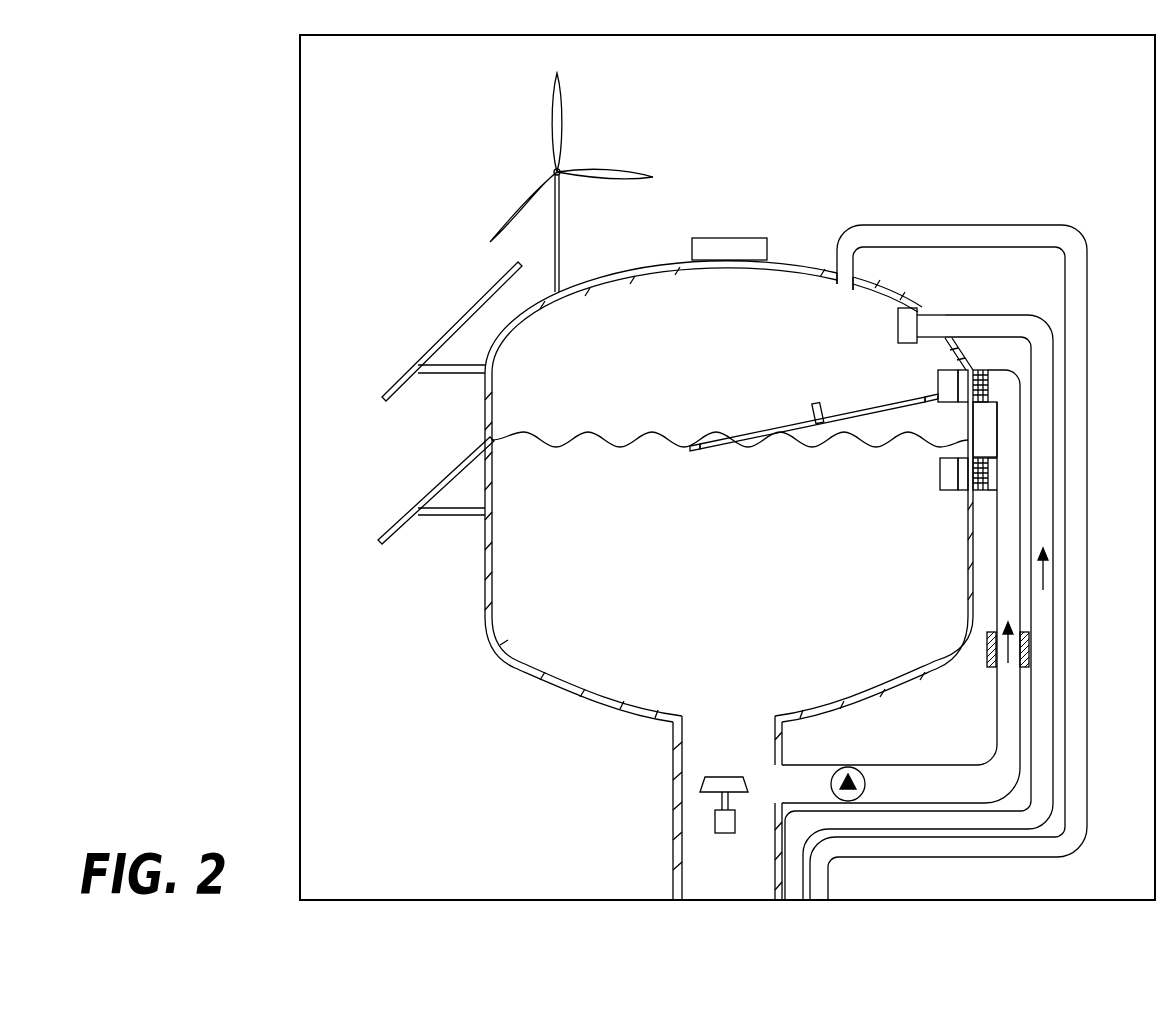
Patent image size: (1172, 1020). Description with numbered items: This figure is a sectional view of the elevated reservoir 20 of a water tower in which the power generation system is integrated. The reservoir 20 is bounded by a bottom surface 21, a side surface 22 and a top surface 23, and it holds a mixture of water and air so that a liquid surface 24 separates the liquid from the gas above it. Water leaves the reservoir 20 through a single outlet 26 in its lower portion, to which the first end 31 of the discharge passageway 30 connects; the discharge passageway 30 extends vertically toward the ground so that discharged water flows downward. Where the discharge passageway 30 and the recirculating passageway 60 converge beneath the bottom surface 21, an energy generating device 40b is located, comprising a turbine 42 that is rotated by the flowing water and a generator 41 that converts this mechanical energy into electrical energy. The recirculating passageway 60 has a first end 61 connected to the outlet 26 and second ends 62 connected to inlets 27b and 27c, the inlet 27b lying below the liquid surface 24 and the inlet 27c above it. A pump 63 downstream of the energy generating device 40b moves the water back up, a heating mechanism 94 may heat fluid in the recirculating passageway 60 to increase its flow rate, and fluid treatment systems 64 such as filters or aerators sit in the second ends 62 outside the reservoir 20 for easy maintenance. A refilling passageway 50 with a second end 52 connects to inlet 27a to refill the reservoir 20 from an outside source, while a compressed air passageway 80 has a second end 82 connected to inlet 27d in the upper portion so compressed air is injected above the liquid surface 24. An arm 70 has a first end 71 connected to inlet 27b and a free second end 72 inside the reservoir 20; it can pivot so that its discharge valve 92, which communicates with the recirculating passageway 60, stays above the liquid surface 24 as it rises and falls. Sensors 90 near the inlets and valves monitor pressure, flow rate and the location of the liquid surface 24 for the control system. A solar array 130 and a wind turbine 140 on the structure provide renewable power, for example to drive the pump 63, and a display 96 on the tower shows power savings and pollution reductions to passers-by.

The reservoir 20 is at (696, 552).
The bottom surface 21 is at (636, 722).
The side surface 22 is at (485, 552).
The top surface 23 is at (616, 270).
The liquid surface 24 is at (527, 432).
The outlet 26 is at (723, 773).
The inlet 27a is at (896, 334).
The inlet 27b is at (938, 370).
The inlet 27c is at (940, 492).
The inlet 27d is at (836, 282).
The discharge passageway 30 is at (832, 858).
The first end 31 is at (673, 826).
The energy generating device 40b is at (736, 797).
The generator 41 is at (737, 816).
The turbine 42 is at (719, 776).
The refilling passageway 50 is at (1053, 370).
The second end 52 is at (922, 310).
The recirculating passageway 60 is at (953, 586).
The first end 61 is at (790, 737).
The second end 62 is at (965, 368).
The pump 63 is at (866, 784).
The fluid treatment system 64 is at (978, 370).
The arm 70 is at (798, 453).
The first end 71 is at (925, 406).
The second end 72 is at (690, 450).
The compressed air passageway 80 is at (1087, 492).
The second end 82 is at (838, 255).
The sensor 90 is at (908, 308).
The discharge valve 92 is at (816, 404).
The heating mechanism 94 is at (1030, 665).
The display 96 is at (729, 238).
The solar array 130 is at (463, 310).
The wind turbine 140 is at (558, 103).